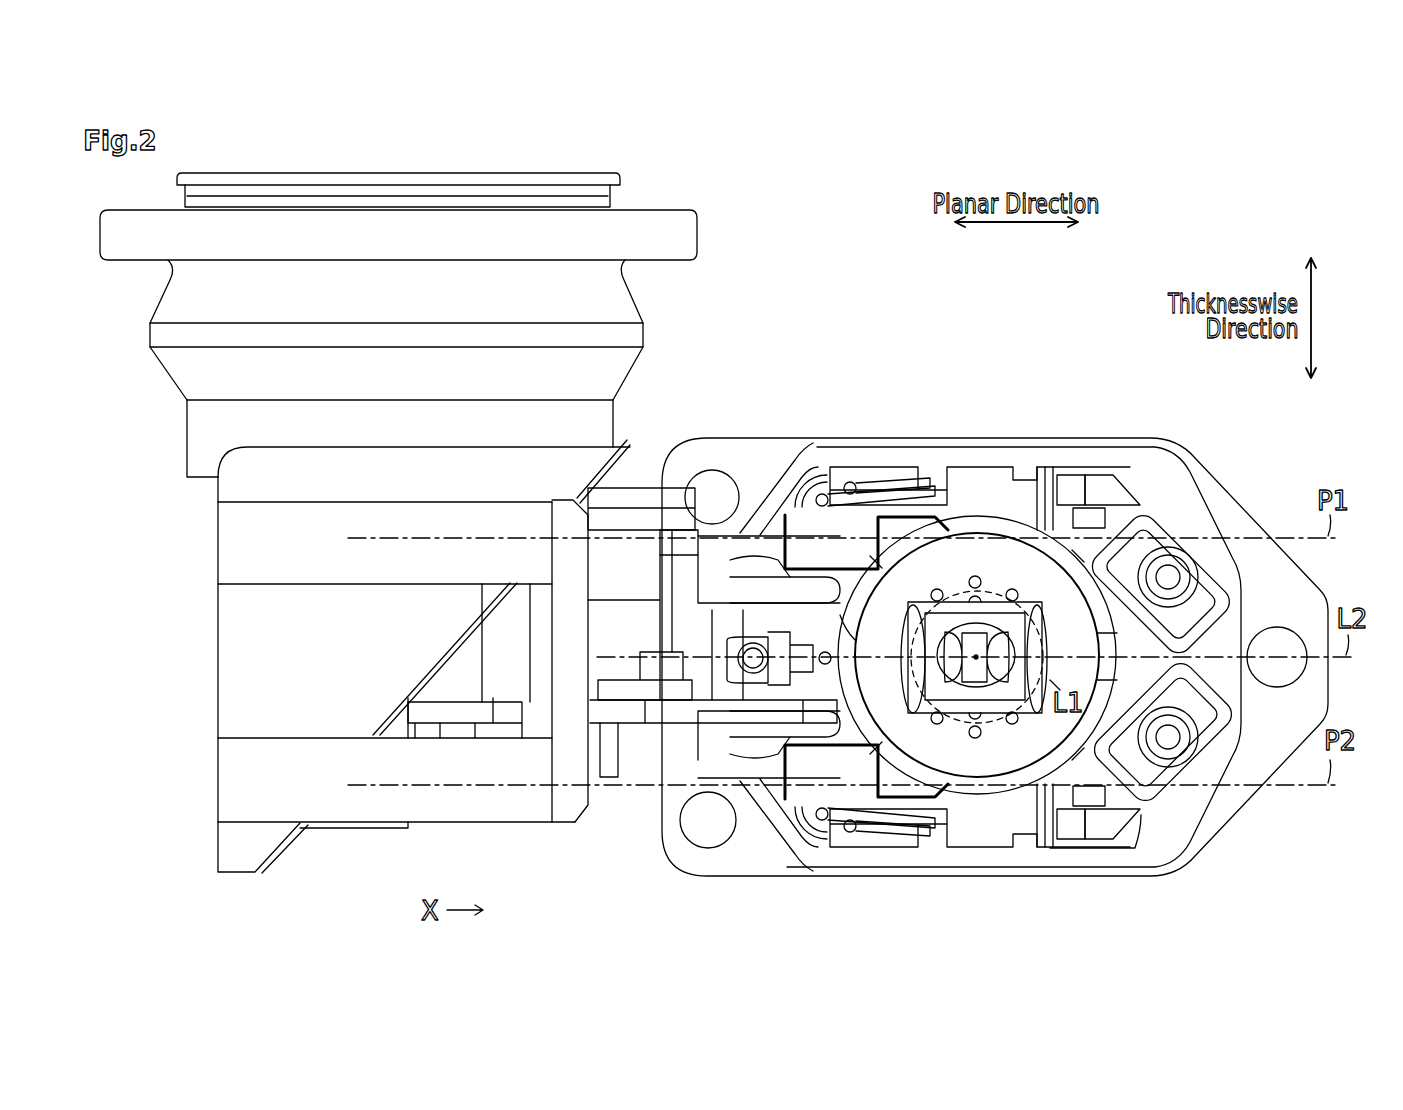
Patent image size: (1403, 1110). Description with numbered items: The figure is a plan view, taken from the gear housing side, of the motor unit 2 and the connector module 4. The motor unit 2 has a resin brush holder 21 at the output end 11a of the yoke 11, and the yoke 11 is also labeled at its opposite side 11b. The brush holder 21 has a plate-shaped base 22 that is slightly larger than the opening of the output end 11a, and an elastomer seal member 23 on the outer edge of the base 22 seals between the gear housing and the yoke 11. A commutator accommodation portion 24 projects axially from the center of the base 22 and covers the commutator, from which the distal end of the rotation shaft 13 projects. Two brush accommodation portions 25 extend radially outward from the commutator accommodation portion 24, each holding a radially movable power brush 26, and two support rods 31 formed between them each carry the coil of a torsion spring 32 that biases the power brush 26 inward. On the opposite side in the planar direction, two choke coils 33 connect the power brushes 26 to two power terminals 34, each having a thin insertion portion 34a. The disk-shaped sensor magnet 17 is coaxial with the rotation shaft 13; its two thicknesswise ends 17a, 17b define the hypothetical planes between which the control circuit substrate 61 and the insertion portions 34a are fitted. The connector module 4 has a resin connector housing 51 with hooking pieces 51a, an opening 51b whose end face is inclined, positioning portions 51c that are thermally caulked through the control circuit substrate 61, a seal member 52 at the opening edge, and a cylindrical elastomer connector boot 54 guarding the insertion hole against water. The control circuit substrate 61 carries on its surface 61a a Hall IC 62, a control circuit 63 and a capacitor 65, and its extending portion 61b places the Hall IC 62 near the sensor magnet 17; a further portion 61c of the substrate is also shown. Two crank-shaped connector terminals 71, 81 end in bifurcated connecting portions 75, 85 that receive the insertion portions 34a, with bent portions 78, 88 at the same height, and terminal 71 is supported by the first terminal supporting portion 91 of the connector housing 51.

The motor unit 2 is at (995, 653).
The connector module 4 is at (210, 734).
The yoke 11 is at (1265, 808).
The output end 11a is at (1212, 497).
The lower housing wall 11b is at (1192, 858).
The rotation shaft 13 is at (1040, 612).
The sensor magnet 17 is at (998, 575).
The one end of the sensor magnet 17a is at (978, 535).
The other end of the sensor magnet 17b is at (978, 780).
The brush holder 21 is at (1172, 462).
The base 22 is at (950, 467).
The seal member 23 is at (1060, 862).
The commutator accommodation portion 24 is at (1040, 480).
The brush accommodation portion 25 is at (1100, 835).
The power brush 26 is at (1128, 836).
The support rod 31 is at (1183, 593).
The torsion spring 32 is at (1200, 573).
The choke coil 33 is at (800, 820).
The power terminal 34 is at (895, 562).
The insertion portion 34a is at (843, 832).
The connector housing 51 is at (218, 688).
The hooking piece 51a is at (515, 812).
The opening 51b is at (283, 858).
The positioning portion 51c is at (470, 632).
The seal member 52 is at (290, 843).
The connector boot 54 is at (643, 318).
The control circuit substrate 61 is at (630, 712).
The surface 61a is at (614, 778).
The extending portion 61b is at (875, 712).
The plate base 61c is at (463, 737).
The Hall IC 62 is at (850, 670).
The control circuit 63 is at (645, 660).
The capacitor 65 is at (448, 678).
The connector terminal 71 is at (712, 540).
The bifurcated connecting portion 75 is at (757, 545).
The bent portion 78 is at (660, 560).
The connector terminal 81 is at (712, 775).
The bifurcated connecting portion 85 is at (757, 770).
The bent portion 88 is at (655, 790).
The first terminal supporting portion 91 is at (668, 578).